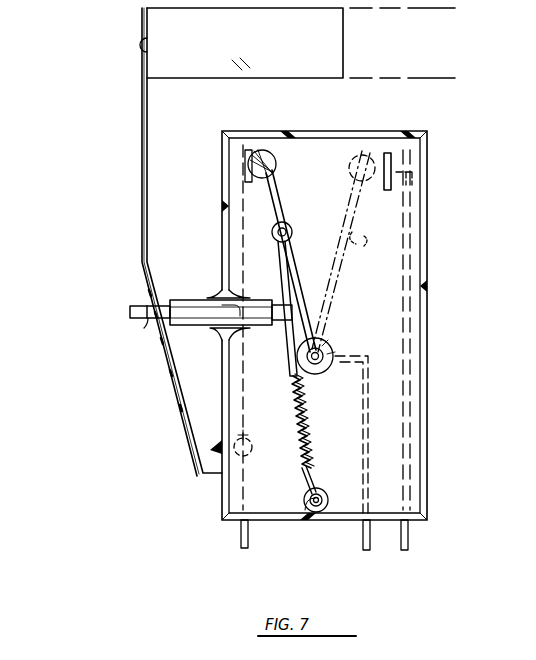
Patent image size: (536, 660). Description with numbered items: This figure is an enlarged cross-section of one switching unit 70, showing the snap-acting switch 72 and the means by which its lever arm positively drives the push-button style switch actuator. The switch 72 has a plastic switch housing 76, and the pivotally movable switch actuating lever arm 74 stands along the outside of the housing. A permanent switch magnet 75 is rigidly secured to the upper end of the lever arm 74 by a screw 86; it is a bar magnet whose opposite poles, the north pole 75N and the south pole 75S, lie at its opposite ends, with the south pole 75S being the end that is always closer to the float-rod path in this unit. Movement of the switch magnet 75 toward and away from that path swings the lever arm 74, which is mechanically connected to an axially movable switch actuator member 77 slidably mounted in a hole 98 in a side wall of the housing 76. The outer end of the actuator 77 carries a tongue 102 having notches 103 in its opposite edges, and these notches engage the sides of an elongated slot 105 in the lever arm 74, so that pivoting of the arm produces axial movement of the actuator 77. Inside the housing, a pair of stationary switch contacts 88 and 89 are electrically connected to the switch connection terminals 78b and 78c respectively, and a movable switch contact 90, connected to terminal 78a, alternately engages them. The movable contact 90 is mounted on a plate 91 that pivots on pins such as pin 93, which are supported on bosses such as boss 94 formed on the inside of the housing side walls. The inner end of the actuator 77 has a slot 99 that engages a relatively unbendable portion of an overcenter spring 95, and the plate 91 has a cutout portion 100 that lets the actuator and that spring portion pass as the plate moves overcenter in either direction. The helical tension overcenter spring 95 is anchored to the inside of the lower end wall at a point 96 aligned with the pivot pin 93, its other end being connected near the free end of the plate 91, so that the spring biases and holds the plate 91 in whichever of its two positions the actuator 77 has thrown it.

The switching unit 70 is at (112, 229).
The snap-acting switch 72 is at (229, 134).
The switch actuating lever arm 74 is at (142, 202).
The switch magnet 75 is at (258, 33).
The north pole 75N is at (205, 60).
The south pole 75S is at (335, 60).
The switch housing 76 is at (288, 130).
The switch actuator member 77 is at (205, 298).
The switch connection terminal 78a is at (366, 550).
The switch connection terminal 78b is at (405, 550).
The switch connection terminal 78c is at (245, 550).
The screw 86 is at (140, 48).
The stationary switch contact 88 is at (392, 162).
The stationary switch contact 89 is at (245, 158).
The movable switch contact 90 is at (288, 130).
The plate 91 is at (288, 207).
The pivot pin 93 is at (322, 352).
The boss 94 is at (322, 372).
The overcenter spring 95 is at (306, 440).
The anchor point 96 is at (303, 498).
The hole 98 is at (216, 330).
The slot 99 is at (281, 330).
The cutout portion 100 is at (290, 240).
The tongue 102 is at (130, 313).
The notches 103 is at (150, 326).
The elongated slot 105 is at (148, 306).